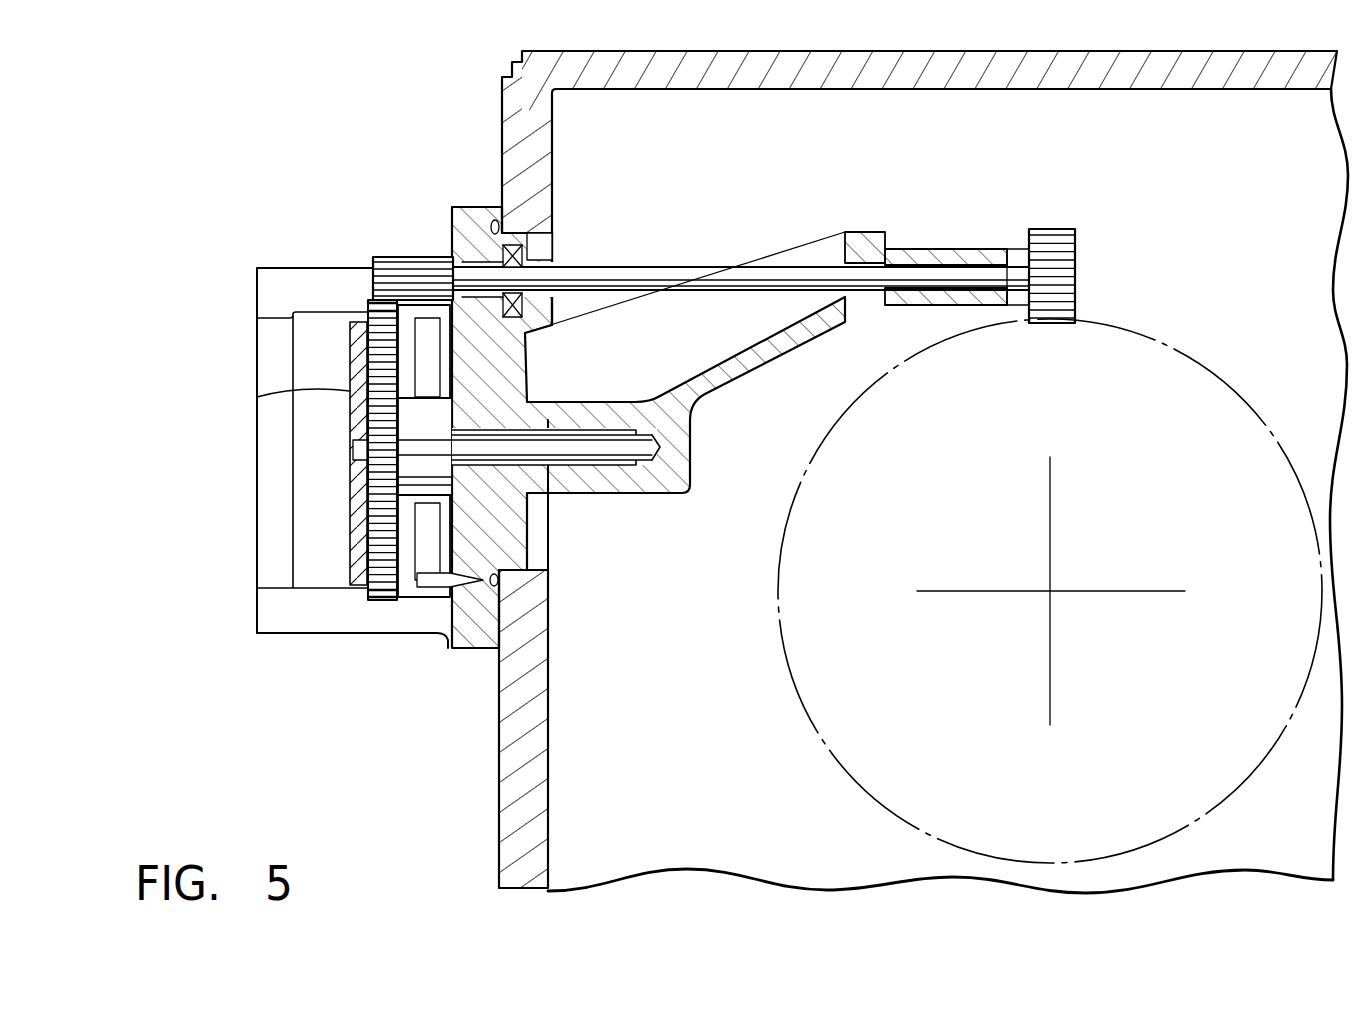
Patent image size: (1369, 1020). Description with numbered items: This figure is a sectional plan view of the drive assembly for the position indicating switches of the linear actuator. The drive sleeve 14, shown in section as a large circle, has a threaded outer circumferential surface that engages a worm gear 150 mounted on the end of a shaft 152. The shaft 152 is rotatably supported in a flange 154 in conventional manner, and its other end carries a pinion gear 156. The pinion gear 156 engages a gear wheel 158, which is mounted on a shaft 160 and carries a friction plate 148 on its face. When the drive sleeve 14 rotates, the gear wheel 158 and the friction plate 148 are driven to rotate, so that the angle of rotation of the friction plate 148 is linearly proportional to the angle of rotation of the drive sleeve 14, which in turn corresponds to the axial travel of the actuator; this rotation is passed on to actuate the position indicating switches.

The drive sleeve 14 is at (780, 704).
The friction plate 148 is at (350, 393).
The worm gear 150 is at (1078, 268).
The shaft 152 is at (705, 268).
The flange 154 is at (798, 355).
The pinion gear 156 is at (395, 257).
The gear wheel 158 is at (378, 598).
The shaft 160 is at (568, 455).